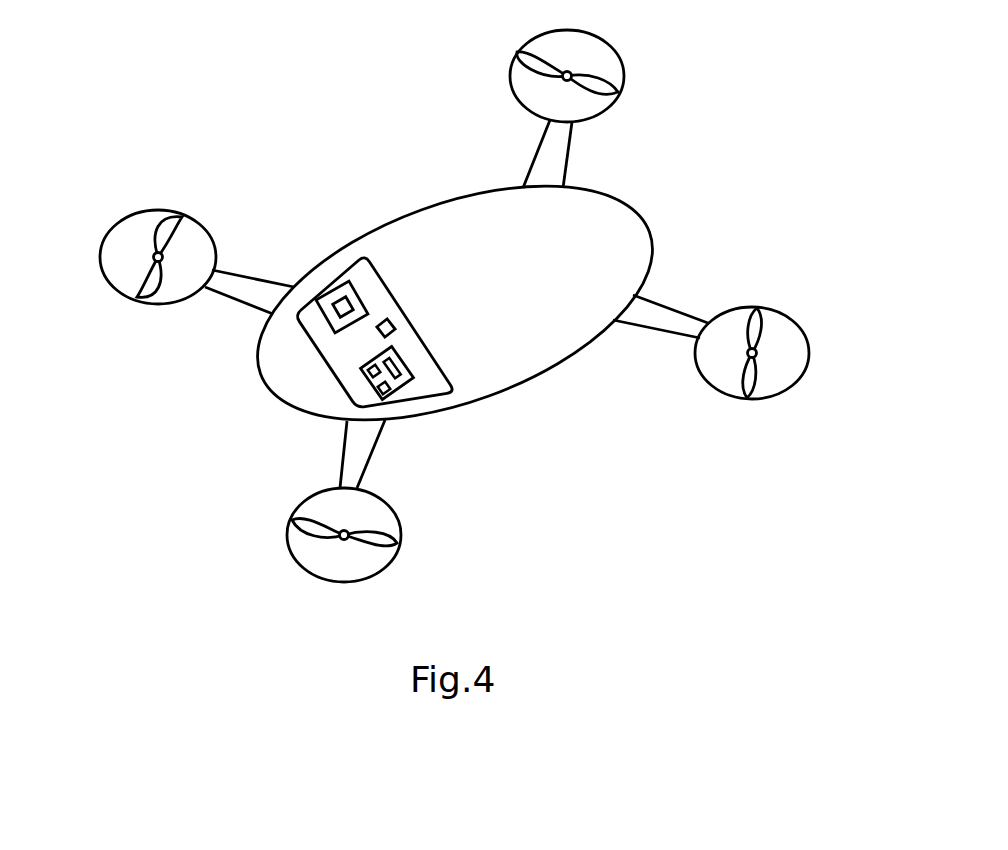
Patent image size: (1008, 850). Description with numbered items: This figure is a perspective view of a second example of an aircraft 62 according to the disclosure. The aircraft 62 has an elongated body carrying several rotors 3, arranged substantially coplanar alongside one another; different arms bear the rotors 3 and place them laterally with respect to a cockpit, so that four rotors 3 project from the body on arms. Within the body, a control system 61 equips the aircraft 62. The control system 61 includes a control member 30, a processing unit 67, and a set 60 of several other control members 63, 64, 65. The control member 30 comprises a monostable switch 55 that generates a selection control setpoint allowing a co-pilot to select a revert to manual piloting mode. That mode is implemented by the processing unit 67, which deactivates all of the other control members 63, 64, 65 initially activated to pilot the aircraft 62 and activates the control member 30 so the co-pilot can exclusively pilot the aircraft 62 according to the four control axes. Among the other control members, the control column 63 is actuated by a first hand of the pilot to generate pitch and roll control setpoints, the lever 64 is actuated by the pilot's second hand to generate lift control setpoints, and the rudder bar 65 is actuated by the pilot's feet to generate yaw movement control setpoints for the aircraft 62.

The rotors 3 is at (620, 52).
The aircraft 62 is at (686, 198).
The control system 61 is at (308, 336).
The control member 30 is at (335, 325).
The monostable switch 55 is at (340, 300).
The processing unit 67 is at (393, 322).
The set of several control members 60 is at (403, 400).
The lever 64 is at (363, 376).
The rudder bar 65 is at (405, 363).
The control column 63 is at (392, 393).